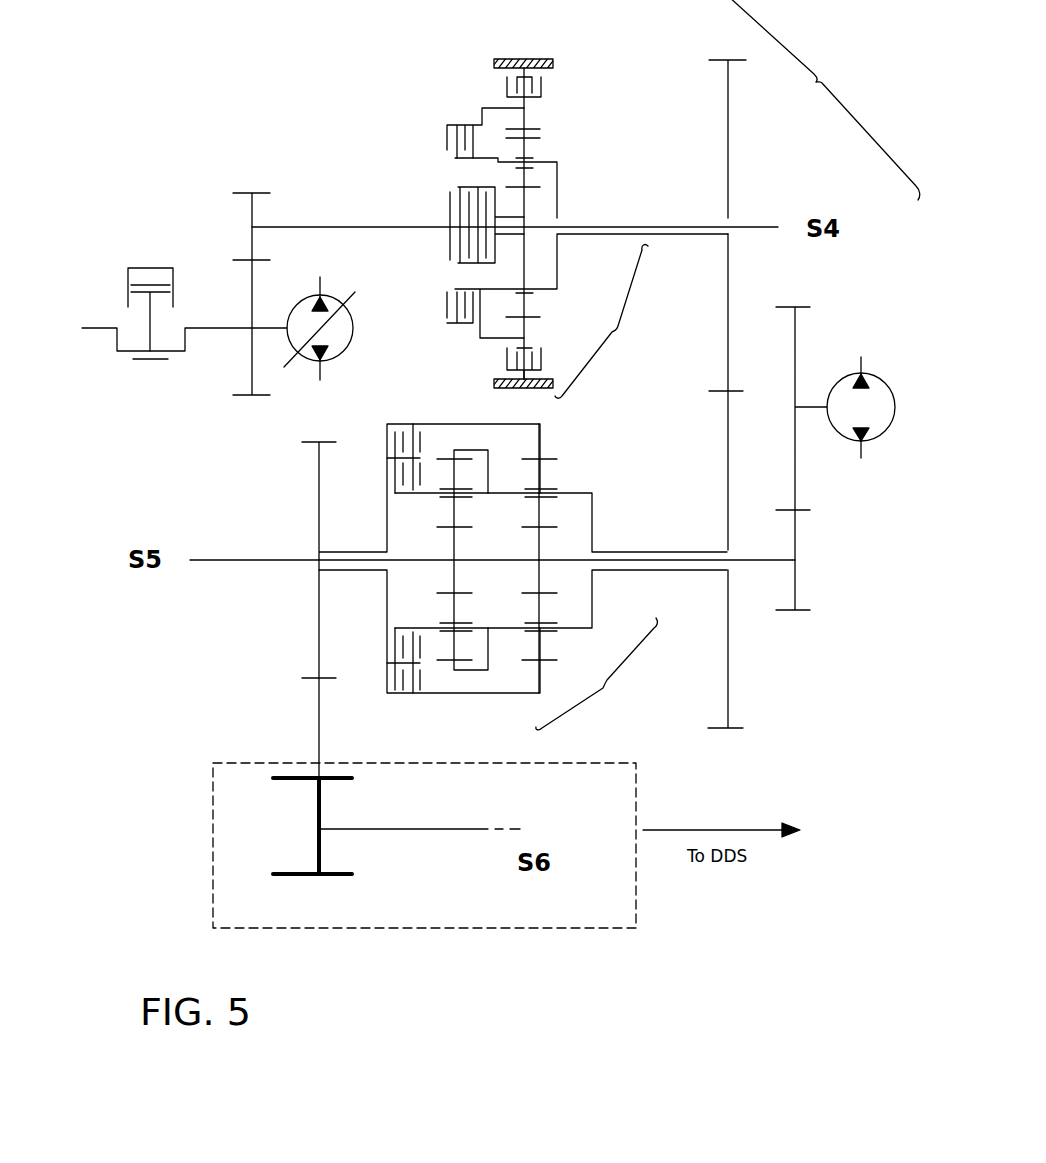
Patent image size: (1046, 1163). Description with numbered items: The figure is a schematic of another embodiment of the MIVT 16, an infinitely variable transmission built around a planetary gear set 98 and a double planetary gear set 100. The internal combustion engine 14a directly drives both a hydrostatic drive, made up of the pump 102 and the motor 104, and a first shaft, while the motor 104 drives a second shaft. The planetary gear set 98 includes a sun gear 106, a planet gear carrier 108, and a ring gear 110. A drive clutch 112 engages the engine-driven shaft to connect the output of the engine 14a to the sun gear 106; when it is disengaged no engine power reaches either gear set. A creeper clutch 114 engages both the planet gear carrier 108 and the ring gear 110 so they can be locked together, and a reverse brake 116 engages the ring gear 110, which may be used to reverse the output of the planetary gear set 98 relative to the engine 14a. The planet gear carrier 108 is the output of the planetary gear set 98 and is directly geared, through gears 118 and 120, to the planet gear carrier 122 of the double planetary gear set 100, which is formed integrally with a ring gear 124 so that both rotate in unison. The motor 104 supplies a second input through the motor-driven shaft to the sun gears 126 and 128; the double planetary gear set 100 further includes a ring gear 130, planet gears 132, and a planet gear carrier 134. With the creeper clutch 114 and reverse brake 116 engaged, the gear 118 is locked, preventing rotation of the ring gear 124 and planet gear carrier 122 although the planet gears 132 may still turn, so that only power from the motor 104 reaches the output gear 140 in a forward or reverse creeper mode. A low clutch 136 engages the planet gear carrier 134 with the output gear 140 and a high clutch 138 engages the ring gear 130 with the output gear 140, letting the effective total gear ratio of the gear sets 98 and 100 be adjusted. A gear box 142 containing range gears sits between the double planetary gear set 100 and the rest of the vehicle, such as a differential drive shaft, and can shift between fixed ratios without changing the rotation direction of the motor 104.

The internal combustion engine 14a is at (150, 268).
The MIVT 16 is at (825, 72).
The planetary gear set 98 is at (620, 333).
The double planetary gear set 100 is at (612, 692).
The pump 102 is at (295, 357).
The motor 104 is at (843, 372).
The sun gear 106 is at (525, 207).
The planet gear carrier 108 is at (557, 160).
The ring gear 110 is at (525, 115).
The drive clutch 112 is at (455, 188).
The creeper clutch 114 is at (462, 122).
The reverse brake 116 is at (541, 86).
The gear 118 is at (740, 305).
The gear 120 is at (739, 649).
The planet gear carrier 122 is at (607, 560).
The ring gear 124 is at (464, 550).
The sun gear 126 is at (528, 626).
The sun gear 128 is at (445, 615).
The ring gear 130 is at (552, 458).
The planet gears 132 is at (552, 511).
The planet gear carrier 134 is at (433, 495).
The low clutch 136 is at (387, 470).
The high clutch 138 is at (390, 432).
The output gear 140 is at (306, 669).
The gear box 142 is at (243, 763).